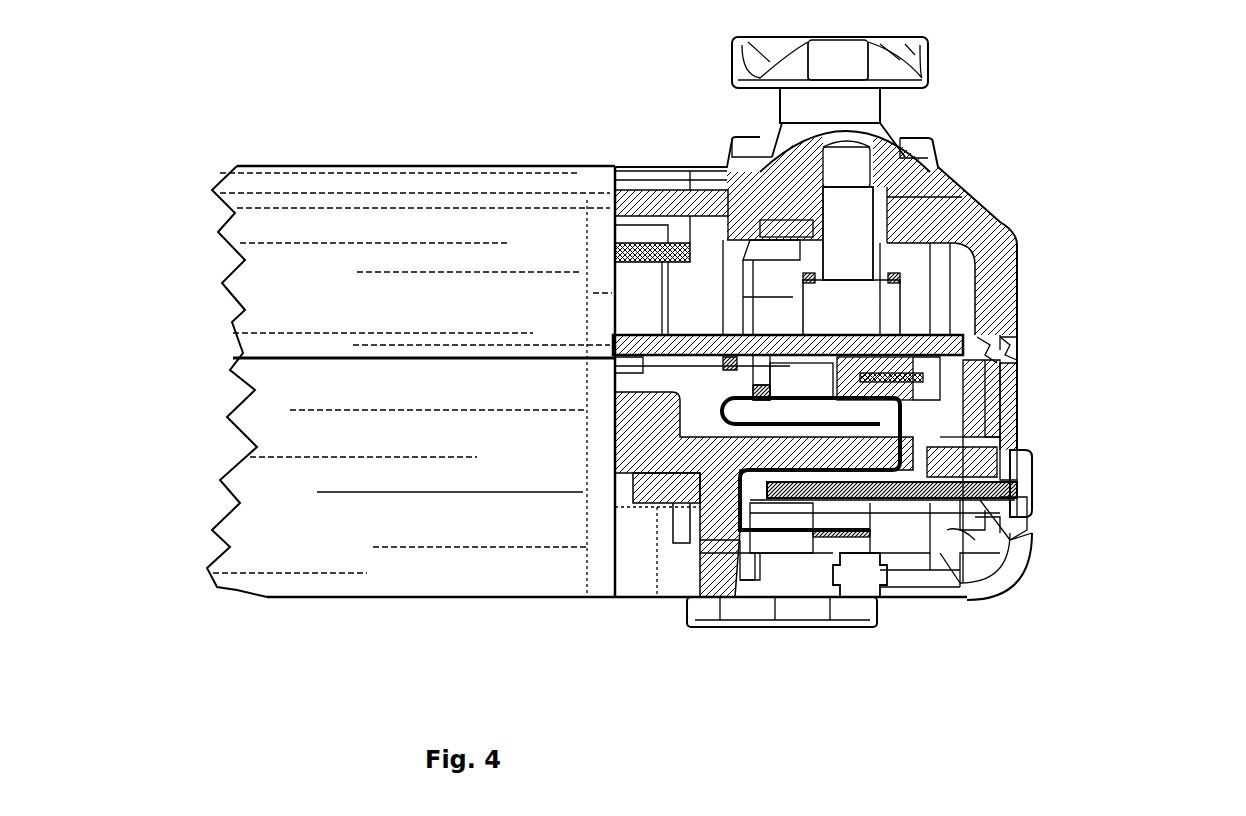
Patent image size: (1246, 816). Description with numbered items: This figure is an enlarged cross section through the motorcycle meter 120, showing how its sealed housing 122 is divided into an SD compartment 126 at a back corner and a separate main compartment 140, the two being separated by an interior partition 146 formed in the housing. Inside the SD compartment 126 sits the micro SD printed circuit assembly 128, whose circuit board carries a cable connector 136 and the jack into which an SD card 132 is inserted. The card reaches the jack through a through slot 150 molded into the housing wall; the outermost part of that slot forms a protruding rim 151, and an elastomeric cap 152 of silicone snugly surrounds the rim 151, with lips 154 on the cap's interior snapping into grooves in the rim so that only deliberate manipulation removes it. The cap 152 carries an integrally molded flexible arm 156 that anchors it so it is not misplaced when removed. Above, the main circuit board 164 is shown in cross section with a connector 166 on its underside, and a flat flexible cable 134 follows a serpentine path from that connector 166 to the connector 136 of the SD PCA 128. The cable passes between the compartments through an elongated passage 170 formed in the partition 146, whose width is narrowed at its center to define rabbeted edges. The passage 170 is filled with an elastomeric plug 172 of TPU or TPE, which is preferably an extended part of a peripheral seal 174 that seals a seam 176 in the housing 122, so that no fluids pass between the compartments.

The motorcycle meter 120 is at (350, 150).
The sealed housing 122 is at (390, 166).
The SD compartment 126 is at (983, 567).
The micro SD printed circuit assembly 128 is at (790, 522).
The SD card 132 is at (1027, 480).
The flat flexible cable 134 is at (700, 383).
The cable connector 136 is at (950, 575).
The main compartment 140 is at (700, 373).
The interior partition 146 is at (790, 450).
The through slot 150 is at (1017, 481).
The rim 151 is at (1020, 463).
The elastomeric cap 152 is at (1027, 492).
The lips 154 is at (977, 507).
The flexible arm 156 is at (900, 610).
The main circuit board 164 is at (640, 318).
The connector 166 is at (1017, 293).
The elongated passage 170 is at (1017, 400).
The elastomeric plug 172 is at (985, 392).
The peripheral seal 174 is at (1017, 352).
The seam 176 is at (1017, 347).